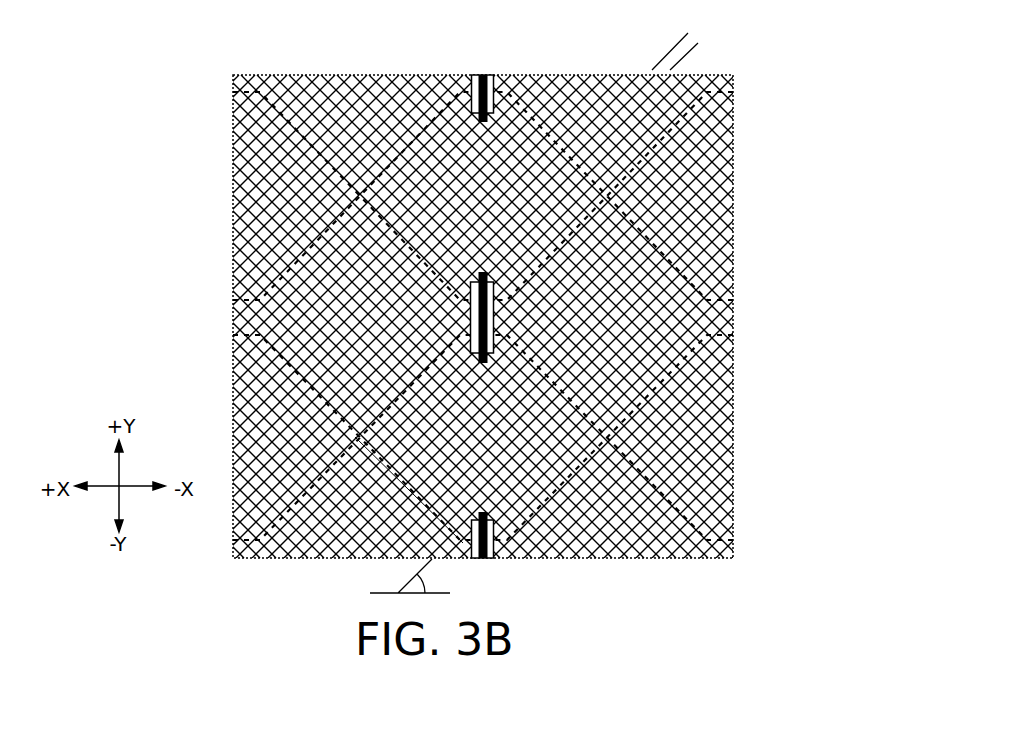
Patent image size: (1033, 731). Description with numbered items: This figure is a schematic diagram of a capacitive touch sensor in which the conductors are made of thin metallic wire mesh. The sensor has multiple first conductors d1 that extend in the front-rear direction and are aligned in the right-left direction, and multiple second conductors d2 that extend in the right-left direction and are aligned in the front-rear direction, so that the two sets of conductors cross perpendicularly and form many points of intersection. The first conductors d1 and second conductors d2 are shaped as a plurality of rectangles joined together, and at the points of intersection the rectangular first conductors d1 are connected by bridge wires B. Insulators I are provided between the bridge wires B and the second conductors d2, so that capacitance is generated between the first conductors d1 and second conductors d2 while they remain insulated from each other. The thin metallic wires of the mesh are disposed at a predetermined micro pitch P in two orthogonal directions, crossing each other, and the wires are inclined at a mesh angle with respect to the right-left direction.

The first conductors d1 is at (463, 112).
The second conductors d2 is at (278, 325).
The bridge wires B is at (483, 272).
The insulators I is at (495, 325).
The micro pitch P is at (652, 15).